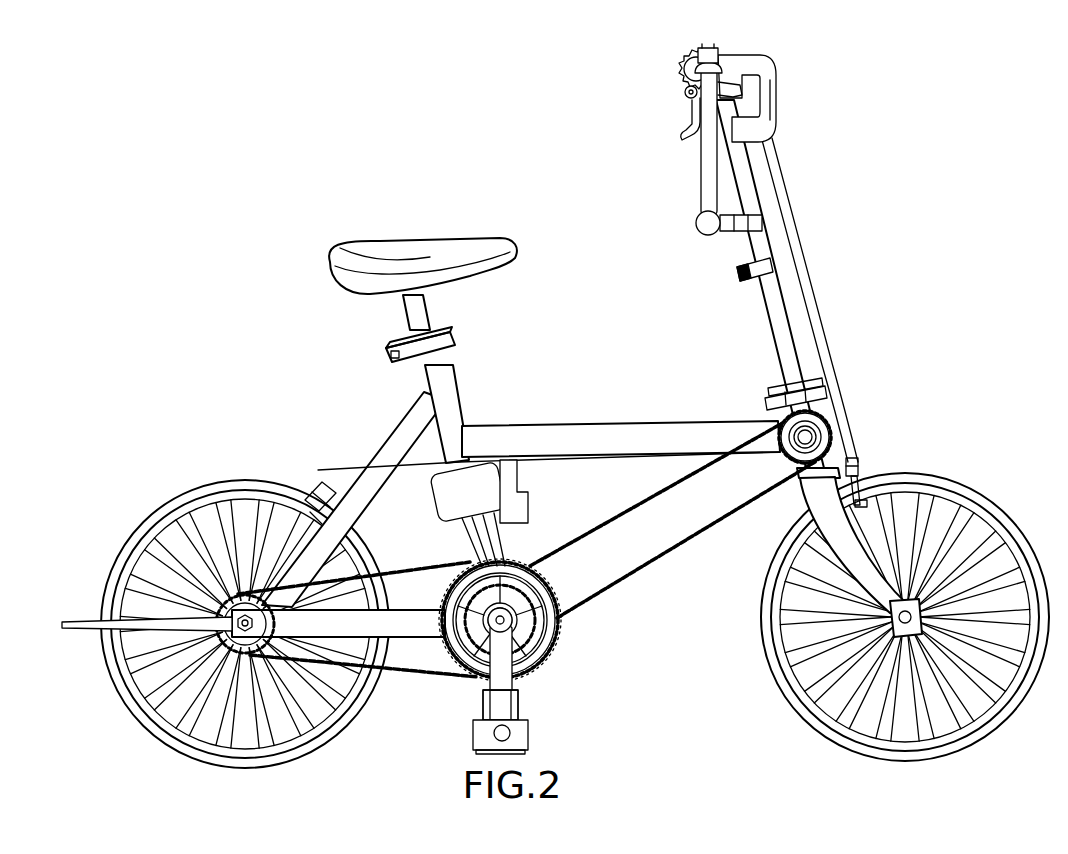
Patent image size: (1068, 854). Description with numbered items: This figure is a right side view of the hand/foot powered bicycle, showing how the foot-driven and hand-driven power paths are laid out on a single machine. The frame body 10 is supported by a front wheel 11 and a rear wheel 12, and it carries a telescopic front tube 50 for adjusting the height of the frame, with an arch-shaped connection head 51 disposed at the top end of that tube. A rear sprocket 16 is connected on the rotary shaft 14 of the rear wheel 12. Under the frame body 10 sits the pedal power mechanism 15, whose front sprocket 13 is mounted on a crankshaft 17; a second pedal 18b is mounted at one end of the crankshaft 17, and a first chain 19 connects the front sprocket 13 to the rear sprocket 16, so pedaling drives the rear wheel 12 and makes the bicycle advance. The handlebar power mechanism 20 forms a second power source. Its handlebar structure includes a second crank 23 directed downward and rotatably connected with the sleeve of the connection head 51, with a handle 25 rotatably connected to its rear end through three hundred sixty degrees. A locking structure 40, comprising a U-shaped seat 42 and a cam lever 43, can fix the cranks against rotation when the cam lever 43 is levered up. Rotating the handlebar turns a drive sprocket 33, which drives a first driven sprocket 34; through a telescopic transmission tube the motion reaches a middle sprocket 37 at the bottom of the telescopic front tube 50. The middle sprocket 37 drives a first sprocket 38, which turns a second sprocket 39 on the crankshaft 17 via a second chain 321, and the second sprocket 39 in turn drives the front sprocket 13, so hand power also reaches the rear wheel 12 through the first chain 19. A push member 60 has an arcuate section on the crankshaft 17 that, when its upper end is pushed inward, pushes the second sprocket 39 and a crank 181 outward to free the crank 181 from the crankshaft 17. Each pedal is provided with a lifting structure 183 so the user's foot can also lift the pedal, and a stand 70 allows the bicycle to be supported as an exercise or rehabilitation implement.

The frame body 10 is at (322, 412).
The front wheel 11 is at (872, 745).
The rear wheel 12 is at (186, 745).
The front sprocket 13 is at (557, 637).
The rotary shaft 14 is at (243, 634).
The pedal power mechanism 15 is at (560, 676).
The rear sprocket 16 is at (257, 640).
The crankshaft 17 is at (533, 673).
The second pedal 18b is at (522, 735).
The crank 181 is at (496, 702).
The lifting structure 183 is at (520, 470).
The first chain 19 is at (388, 676).
The handlebar power mechanism 20 is at (754, 44).
The second crank 23 is at (701, 168).
The handle 25 is at (705, 223).
The drive sprocket 33 is at (680, 66).
The first driven sprocket 34 is at (692, 106).
The middle sprocket 37 is at (773, 398).
The first sprocket 38 is at (792, 465).
The second sprocket 39 is at (532, 582).
The locking structure 40 is at (666, 78).
The U-shaped seat 42 is at (684, 94).
The cam lever 43 is at (679, 136).
The telescopic front tube 50 is at (724, 290).
The connection head 51 is at (810, 277).
The push member 60 is at (426, 503).
The stand 70 is at (69, 632).
The second chain 321 is at (675, 553).